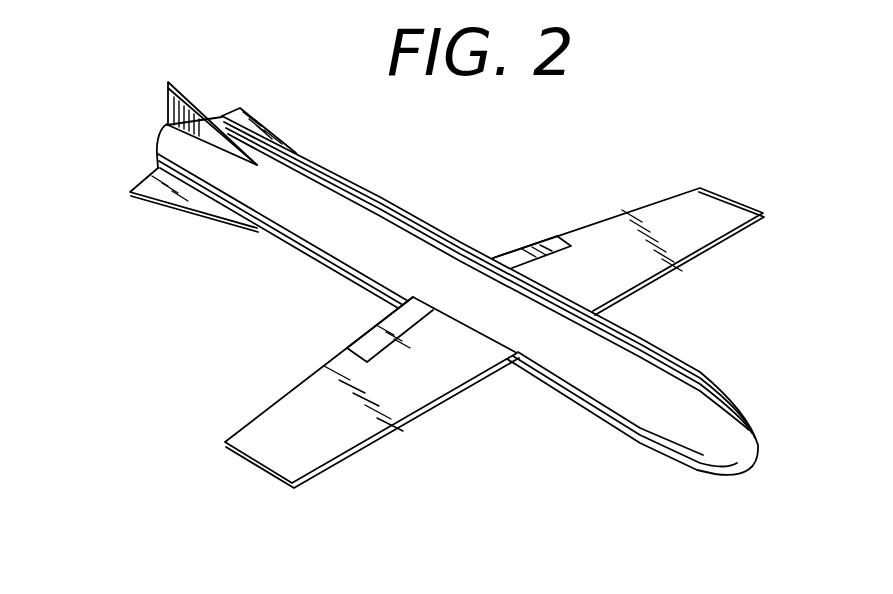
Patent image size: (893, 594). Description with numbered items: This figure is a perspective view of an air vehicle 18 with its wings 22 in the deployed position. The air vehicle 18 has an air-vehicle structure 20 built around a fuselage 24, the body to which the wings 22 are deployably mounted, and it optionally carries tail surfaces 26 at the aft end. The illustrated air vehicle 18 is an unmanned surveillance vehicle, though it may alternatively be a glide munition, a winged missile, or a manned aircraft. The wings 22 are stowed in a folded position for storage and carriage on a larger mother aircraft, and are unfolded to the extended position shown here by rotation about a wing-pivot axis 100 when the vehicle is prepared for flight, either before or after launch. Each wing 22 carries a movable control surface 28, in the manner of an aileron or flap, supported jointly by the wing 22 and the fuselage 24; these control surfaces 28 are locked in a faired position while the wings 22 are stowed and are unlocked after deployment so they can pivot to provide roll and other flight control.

The air vehicle 18 is at (152, 229).
The air-vehicle structure 20 is at (523, 362).
The deployable wings 22 is at (715, 242).
The fuselage 24 is at (311, 220).
The tail surfaces 26 is at (238, 108).
The control surfaces 28 is at (375, 346).
The wing-pivot axis 100 is at (561, 346).